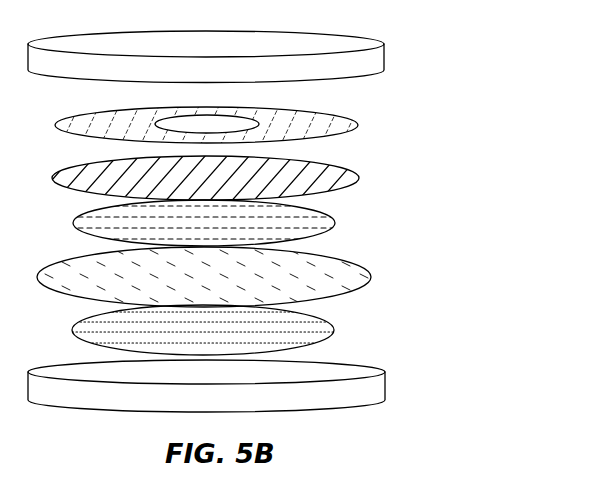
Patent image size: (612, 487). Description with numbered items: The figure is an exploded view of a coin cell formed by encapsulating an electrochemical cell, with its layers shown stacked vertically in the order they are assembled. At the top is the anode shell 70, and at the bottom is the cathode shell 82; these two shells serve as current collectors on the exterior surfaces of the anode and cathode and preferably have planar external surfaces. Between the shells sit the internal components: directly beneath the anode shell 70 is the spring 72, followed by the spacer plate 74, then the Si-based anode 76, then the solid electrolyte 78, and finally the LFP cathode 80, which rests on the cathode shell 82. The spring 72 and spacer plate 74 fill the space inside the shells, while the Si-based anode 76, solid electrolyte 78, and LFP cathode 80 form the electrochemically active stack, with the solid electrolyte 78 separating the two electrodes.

The anode shell 70 is at (388, 57).
The spring 72 is at (366, 125).
The spacer plate 74 is at (366, 177).
The Si-based anode 76 is at (356, 222).
The solid electrolyte 78 is at (380, 275).
The LFP cathode 80 is at (358, 324).
The cathode shell 82 is at (388, 382).